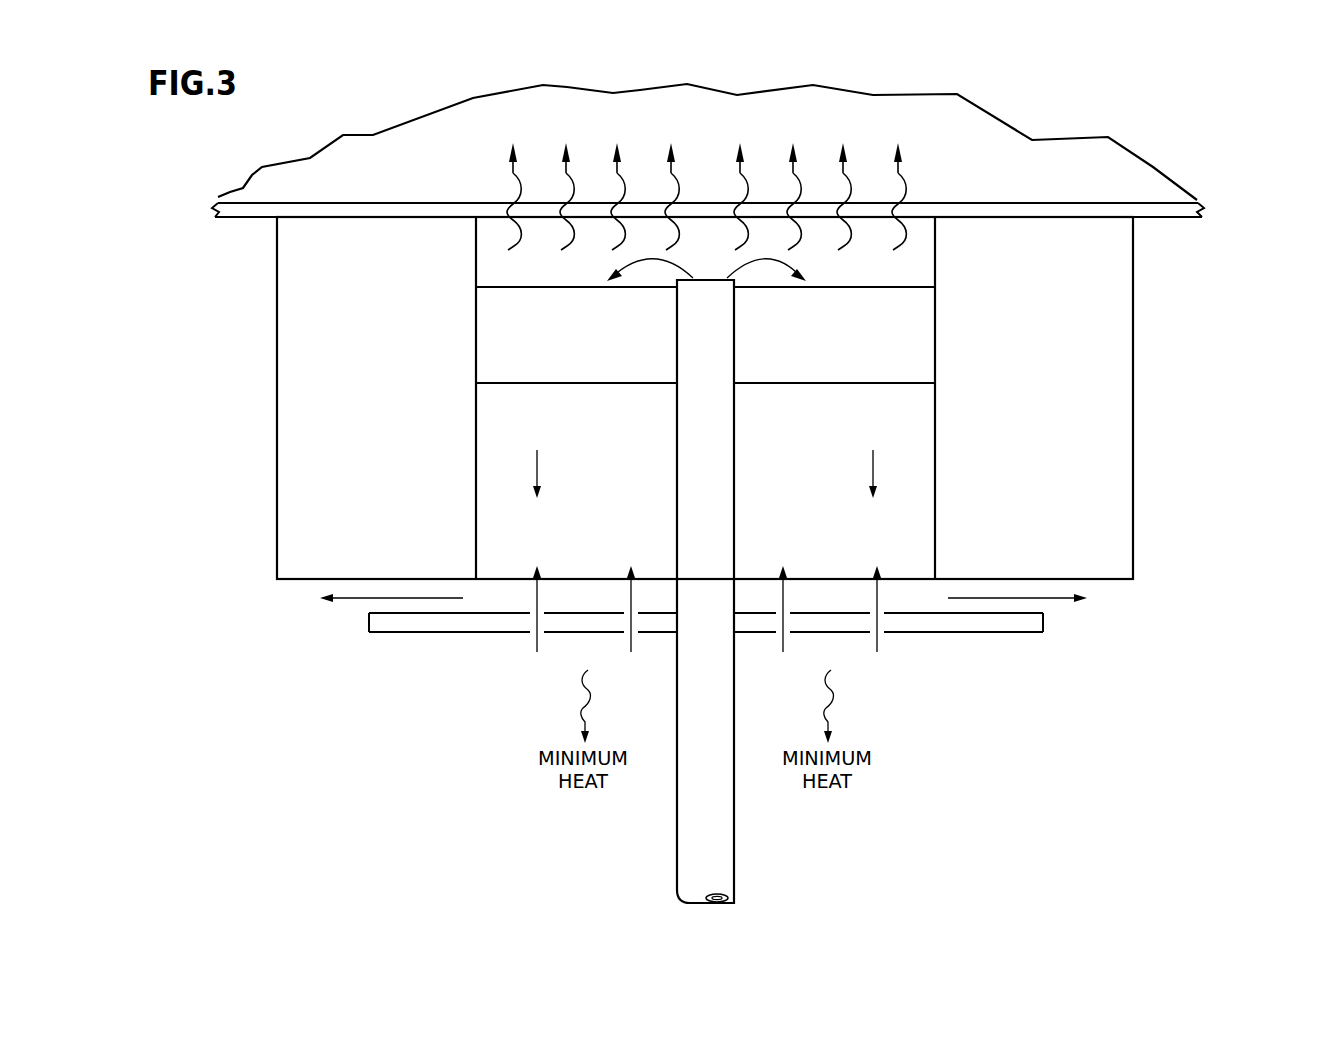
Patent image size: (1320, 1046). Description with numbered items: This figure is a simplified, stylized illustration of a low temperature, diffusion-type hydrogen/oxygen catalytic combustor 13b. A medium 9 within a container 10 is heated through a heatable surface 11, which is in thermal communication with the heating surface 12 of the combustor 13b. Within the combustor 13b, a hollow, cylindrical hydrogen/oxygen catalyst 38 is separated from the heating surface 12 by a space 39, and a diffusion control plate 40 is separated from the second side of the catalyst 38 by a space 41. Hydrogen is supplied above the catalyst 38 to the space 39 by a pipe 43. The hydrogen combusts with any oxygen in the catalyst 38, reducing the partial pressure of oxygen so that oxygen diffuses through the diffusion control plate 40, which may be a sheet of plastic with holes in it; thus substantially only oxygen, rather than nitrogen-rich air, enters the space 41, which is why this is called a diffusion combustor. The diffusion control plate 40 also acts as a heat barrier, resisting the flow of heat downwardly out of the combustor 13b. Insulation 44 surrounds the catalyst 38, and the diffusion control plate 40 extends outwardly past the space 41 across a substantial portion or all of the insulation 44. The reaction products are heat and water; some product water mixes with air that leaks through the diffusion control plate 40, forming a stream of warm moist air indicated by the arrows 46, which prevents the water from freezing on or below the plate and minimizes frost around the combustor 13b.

The medium 9 is at (713, 159).
The container 10 is at (730, 229).
The heatable surface 11 is at (753, 202).
The heating surface 12 is at (791, 219).
The low temperature diffusion-type combustor 13b is at (1160, 393).
The hydrogen/oxygen catalyst 38 is at (820, 372).
The space 39 is at (557, 257).
The diffusion control plate 40 is at (960, 633).
The space 41 is at (613, 475).
The pipe 43 is at (725, 862).
The insulation 44 is at (1051, 475).
The arrows 46 is at (358, 602).